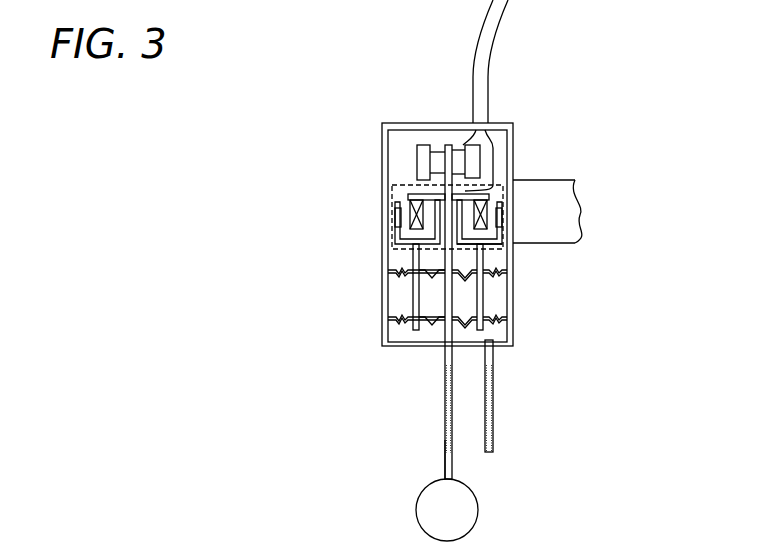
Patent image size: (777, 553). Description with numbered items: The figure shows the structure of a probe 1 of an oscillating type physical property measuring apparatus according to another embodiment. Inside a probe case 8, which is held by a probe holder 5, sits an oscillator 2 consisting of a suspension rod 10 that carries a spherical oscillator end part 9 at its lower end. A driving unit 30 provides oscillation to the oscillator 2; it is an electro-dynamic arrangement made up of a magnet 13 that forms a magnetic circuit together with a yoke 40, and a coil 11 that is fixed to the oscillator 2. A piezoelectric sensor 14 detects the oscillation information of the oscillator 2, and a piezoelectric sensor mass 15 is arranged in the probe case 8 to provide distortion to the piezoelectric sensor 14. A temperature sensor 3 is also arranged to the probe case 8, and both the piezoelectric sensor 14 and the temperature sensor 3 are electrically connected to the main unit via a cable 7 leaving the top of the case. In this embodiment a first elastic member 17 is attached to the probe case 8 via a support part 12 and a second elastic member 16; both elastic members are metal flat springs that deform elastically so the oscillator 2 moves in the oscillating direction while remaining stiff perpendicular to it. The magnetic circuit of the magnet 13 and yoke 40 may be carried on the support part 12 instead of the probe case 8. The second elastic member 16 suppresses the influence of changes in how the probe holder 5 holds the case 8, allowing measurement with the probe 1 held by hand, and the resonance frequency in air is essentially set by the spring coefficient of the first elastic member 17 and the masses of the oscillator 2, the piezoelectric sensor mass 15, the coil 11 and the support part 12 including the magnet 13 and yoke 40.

The probe 1 is at (321, 69).
The oscillator 2 is at (437, 447).
The temperature sensor 3 is at (493, 402).
The probe holder 5 is at (547, 187).
The cable 7 is at (480, 92).
The probe case 8 is at (380, 141).
The spherical oscillator end part 9 is at (472, 510).
The suspension rod 10 is at (450, 455).
The coil 11 is at (408, 204).
The support part 12 is at (416, 330).
The magnet 13 is at (398, 218).
The piezoelectric sensor 14 is at (438, 144).
The piezoelectric sensor mass 15 is at (424, 144).
The second elastic member 16 is at (400, 278).
The first elastic member 17 is at (428, 334).
The driving unit 30 is at (488, 249).
The yoke 40 is at (397, 208).